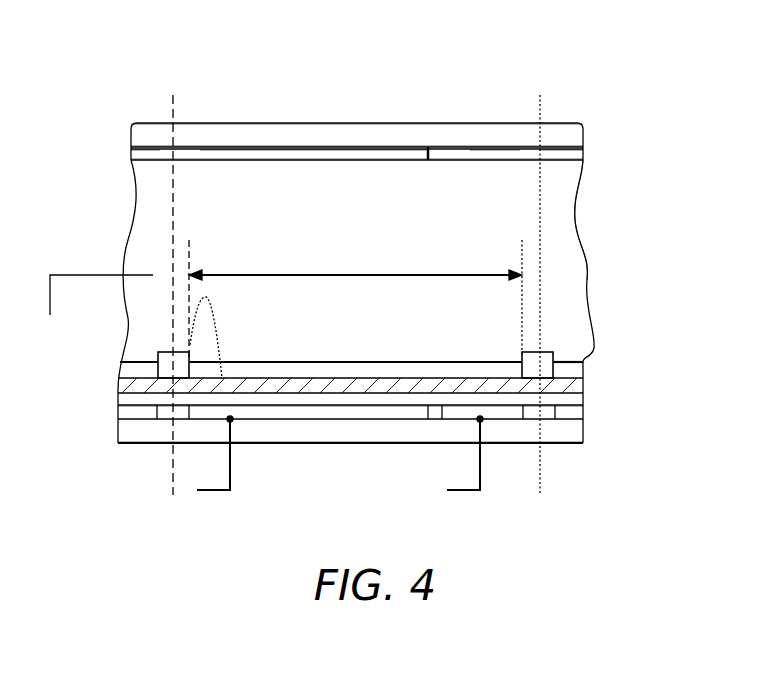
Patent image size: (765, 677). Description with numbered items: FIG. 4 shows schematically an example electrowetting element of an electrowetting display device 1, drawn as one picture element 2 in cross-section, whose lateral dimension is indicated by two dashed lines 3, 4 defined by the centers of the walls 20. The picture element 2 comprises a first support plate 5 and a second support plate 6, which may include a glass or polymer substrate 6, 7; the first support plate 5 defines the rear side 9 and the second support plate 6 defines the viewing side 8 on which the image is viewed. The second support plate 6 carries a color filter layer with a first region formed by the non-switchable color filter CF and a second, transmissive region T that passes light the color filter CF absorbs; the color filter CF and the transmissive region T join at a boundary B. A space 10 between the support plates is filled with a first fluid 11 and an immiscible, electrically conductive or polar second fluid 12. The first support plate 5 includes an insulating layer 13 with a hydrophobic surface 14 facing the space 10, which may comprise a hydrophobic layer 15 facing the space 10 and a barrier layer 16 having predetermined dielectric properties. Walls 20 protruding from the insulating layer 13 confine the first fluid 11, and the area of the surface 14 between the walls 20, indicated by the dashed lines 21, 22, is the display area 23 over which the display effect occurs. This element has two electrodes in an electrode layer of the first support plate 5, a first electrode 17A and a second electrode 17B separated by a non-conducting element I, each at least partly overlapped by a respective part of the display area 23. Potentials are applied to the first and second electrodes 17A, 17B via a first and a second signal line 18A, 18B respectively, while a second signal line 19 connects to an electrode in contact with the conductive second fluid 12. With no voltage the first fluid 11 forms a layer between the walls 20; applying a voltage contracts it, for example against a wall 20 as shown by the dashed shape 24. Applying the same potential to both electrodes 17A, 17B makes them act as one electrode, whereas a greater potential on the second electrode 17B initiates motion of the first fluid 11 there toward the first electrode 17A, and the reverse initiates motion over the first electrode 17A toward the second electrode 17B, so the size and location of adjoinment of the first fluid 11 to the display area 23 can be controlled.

The electrowetting display device 1 is at (633, 95).
The picture element 2 is at (326, 84).
The dashed line 3 is at (174, 108).
The dashed line 4 is at (541, 108).
The first support plate 5 is at (640, 362).
The second support plate 6 is at (485, 135).
The substrate 7 is at (565, 436).
The viewing side 8 is at (258, 123).
The rear side 9 is at (318, 445).
The space 10 is at (397, 188).
The first fluid 11 is at (478, 366).
The second fluid 12 is at (580, 248).
The insulating layer 13 is at (596, 378).
The surface 14 is at (412, 378).
The hydrophobic layer 15 is at (350, 386).
The barrier layer 16 is at (287, 393).
The first electrode 17A is at (383, 410).
The second electrode 17B is at (505, 410).
The first signal line 18A is at (215, 493).
The second signal line 18B is at (465, 493).
The second signal line 19 is at (70, 275).
The walls 20 is at (167, 368).
The dashed line 21 is at (192, 243).
The dashed line 22 is at (520, 243).
The display area 23 is at (355, 263).
The dashed shape 24 is at (197, 309).
The boundary B is at (430, 162).
The color filter CF is at (268, 152).
The transmissive region T is at (148, 152).
The non-conducting element I is at (437, 410).